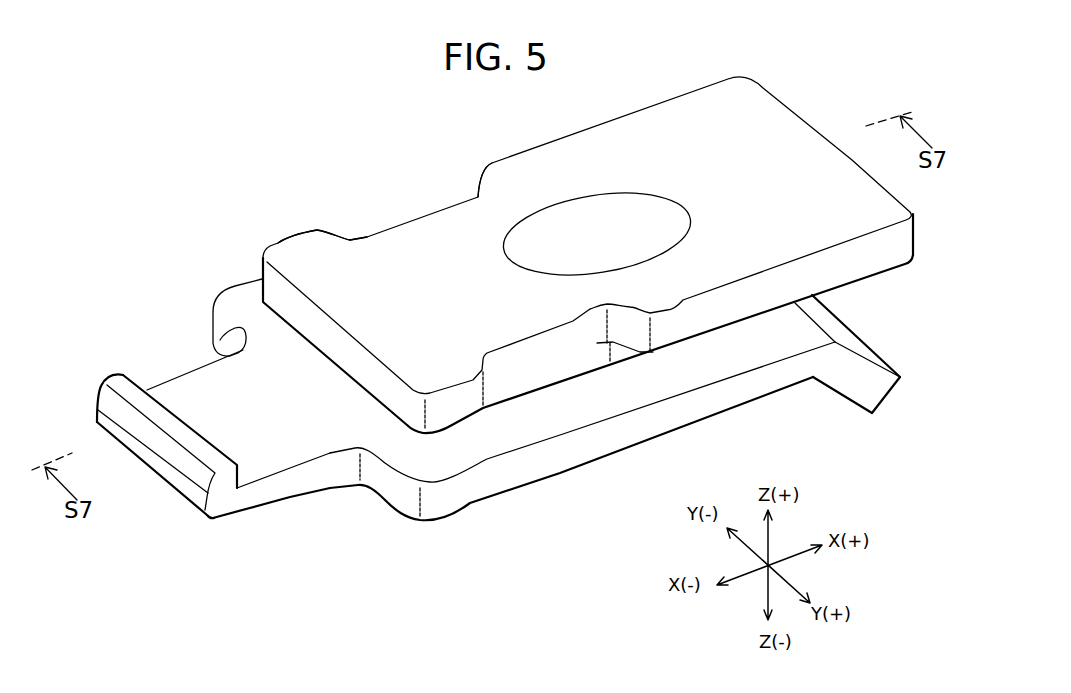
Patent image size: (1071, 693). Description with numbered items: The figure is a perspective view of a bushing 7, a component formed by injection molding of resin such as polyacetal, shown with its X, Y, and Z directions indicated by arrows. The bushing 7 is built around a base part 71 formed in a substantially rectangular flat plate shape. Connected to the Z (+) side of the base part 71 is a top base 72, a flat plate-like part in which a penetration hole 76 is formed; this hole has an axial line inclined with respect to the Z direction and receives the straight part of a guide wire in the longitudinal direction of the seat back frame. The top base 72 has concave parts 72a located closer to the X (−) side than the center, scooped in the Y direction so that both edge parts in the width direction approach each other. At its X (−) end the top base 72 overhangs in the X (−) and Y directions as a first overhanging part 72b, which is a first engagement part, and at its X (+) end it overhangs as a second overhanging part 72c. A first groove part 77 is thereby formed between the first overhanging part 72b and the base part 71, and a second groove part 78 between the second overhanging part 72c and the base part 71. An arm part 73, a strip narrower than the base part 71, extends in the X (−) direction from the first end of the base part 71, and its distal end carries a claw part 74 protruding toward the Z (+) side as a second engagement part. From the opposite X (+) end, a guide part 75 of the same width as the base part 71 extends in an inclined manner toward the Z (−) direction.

The bushing 7 is at (657, 126).
The base part 71 is at (628, 450).
The top base 72 is at (780, 108).
The concave part 72a is at (407, 221).
The first overhanging part 72b is at (283, 240).
The second overhanging part 72c is at (876, 272).
The arm part 73 is at (278, 505).
The claw part 74 is at (125, 376).
The guide part 75 is at (842, 395).
The penetration hole 76 is at (563, 210).
The first groove part 77 is at (391, 419).
The second groove part 78 is at (780, 312).